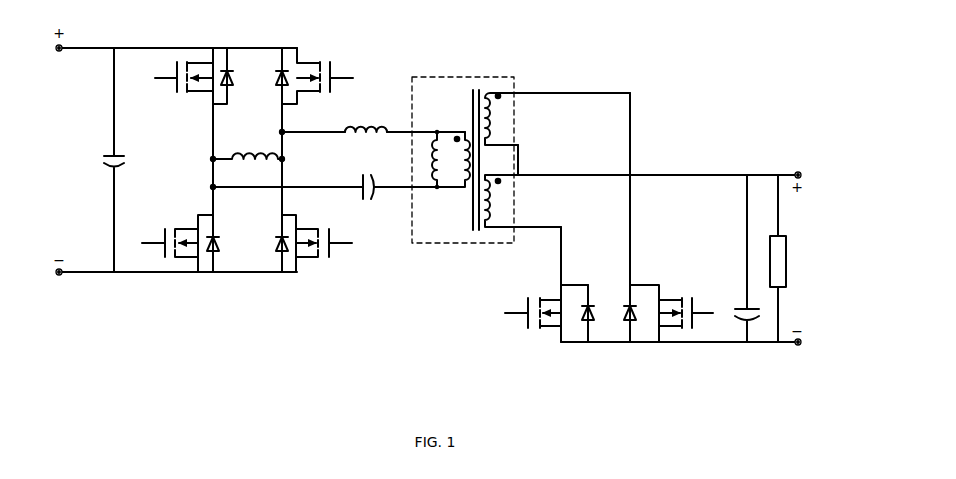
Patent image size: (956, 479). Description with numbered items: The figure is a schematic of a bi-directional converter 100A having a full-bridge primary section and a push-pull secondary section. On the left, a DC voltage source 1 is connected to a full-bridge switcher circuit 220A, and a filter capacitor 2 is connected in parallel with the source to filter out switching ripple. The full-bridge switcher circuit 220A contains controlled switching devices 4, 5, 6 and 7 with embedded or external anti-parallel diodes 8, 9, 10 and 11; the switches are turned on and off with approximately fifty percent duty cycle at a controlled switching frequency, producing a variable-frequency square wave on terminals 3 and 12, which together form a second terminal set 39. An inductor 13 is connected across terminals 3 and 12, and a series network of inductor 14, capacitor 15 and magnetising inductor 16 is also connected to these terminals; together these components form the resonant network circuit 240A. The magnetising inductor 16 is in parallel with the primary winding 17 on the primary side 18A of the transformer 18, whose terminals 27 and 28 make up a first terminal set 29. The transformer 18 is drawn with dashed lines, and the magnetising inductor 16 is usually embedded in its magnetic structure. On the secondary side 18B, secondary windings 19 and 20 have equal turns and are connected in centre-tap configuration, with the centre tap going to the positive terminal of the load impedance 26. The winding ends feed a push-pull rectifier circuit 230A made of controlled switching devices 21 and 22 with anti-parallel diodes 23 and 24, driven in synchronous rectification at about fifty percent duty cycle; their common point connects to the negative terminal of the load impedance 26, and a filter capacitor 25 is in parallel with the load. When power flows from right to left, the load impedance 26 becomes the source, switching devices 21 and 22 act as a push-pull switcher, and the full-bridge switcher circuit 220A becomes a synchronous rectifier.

The bi-directional converter 100A is at (401, 70).
The DC voltage source 1 is at (68, 52).
The filter capacitor 2 is at (122, 166).
The terminal 3 is at (210, 161).
The controlled switching device 4 is at (197, 92).
The controlled switching device 5 is at (301, 62).
The controlled switching device 6 is at (164, 246).
The controlled switching device 7 is at (299, 228).
The anti-parallel diode 8 is at (235, 81).
The anti-parallel diode 9 is at (278, 80).
The anti-parallel diode 10 is at (218, 240).
The anti-parallel diode 11 is at (278, 245).
The terminal 12 is at (287, 160).
The inductor 13 is at (256, 156).
The inductor 14 is at (371, 127).
The capacitor 15 is at (370, 176).
The magnetising inductor 16 is at (433, 158).
The primary winding 17 is at (466, 152).
The transformer 18 is at (515, 157).
The primary side 18A is at (435, 186).
The secondary side 18B is at (557, 181).
The secondary winding 19 is at (493, 121).
The secondary winding 20 is at (493, 200).
The controlled switching device 21 is at (556, 297).
The controlled switching device 22 is at (663, 297).
The anti-parallel diode 23 is at (594, 315).
The anti-parallel diode 24 is at (627, 311).
The filter capacitor 25 is at (741, 306).
The load impedance 26 is at (788, 257).
The terminal 27 is at (438, 131).
The terminal 28 is at (438, 189).
The first terminal set 29 is at (446, 162).
The second terminal set 39 is at (257, 160).
The full-bridge switcher circuit 220A is at (249, 291).
The push-pull rectifier circuit 230A is at (609, 339).
The resonant network circuit 240A is at (382, 219).